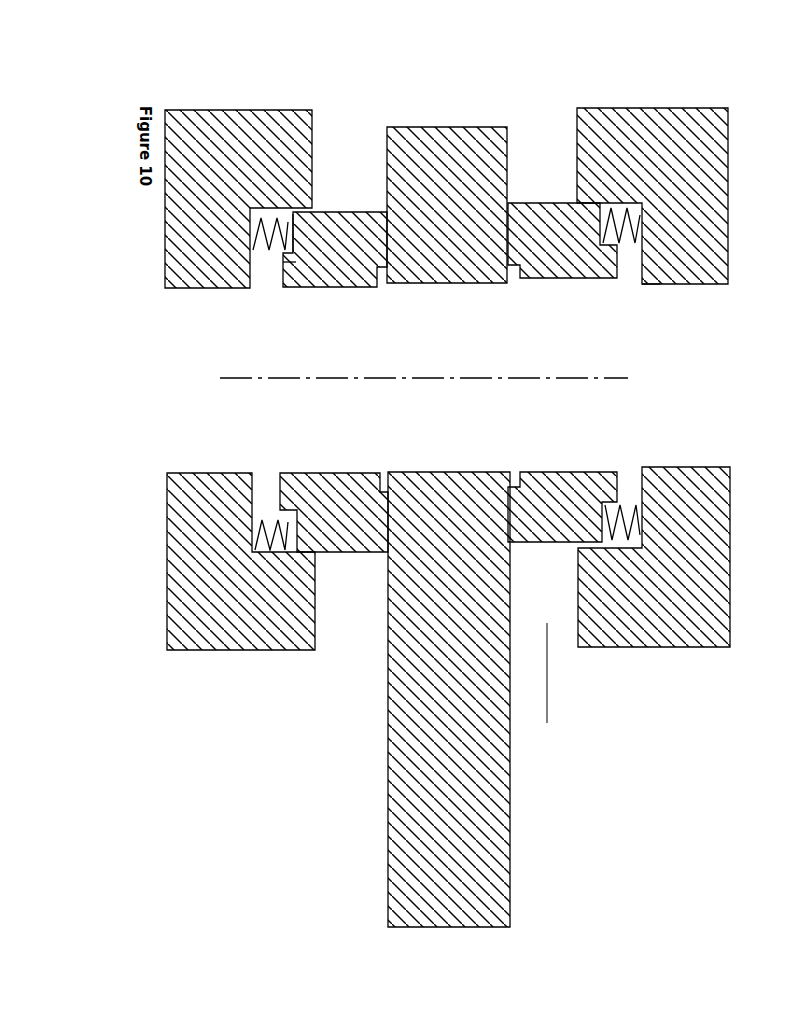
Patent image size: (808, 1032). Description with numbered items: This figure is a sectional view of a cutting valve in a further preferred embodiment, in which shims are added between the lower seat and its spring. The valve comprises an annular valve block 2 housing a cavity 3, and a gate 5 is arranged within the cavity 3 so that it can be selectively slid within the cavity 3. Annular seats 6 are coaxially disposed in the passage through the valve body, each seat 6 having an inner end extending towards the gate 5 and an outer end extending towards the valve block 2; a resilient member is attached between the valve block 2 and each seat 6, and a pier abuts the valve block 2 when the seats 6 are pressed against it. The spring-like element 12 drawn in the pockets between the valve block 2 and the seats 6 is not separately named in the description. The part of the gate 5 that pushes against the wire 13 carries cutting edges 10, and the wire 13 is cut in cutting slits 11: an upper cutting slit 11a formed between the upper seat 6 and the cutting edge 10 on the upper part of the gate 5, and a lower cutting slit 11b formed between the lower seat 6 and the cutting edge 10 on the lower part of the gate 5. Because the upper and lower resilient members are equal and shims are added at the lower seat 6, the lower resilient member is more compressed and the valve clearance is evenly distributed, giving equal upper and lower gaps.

The annular valve block 2 is at (202, 122).
The cavity 3 is at (551, 685).
The gate 5 is at (390, 130).
The annular seat 6 is at (541, 205).
The cutting edge 10 is at (328, 212).
The cutting slit 11 is at (242, 380).
The upper cutting slit 11a is at (655, 284).
The lower cutting slit 11b is at (278, 264).
The spring 12 is at (253, 218).
The wire 13 is at (292, 212).